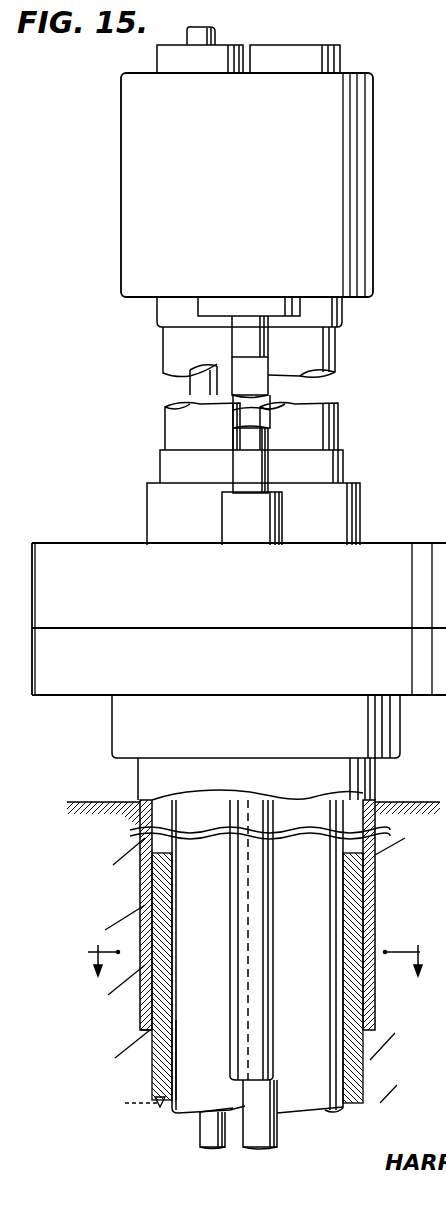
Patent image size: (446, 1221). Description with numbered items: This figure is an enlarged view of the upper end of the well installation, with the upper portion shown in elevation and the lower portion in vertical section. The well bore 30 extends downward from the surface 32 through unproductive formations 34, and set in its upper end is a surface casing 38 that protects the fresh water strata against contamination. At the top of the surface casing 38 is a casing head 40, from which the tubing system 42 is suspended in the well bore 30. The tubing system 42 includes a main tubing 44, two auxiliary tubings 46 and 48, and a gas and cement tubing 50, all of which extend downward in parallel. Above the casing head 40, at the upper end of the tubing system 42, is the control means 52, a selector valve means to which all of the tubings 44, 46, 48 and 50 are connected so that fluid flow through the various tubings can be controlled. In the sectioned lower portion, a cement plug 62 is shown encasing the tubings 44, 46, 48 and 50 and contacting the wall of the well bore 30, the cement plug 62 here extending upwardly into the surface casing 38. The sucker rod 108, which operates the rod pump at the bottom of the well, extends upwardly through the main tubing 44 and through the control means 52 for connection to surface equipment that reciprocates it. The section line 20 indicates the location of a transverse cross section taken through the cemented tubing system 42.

The section line 20- 20 is at (241, 977).
The well bore 30 is at (160, 1104).
The surface 32 is at (85, 803).
The unproductive formations 34 is at (127, 1086).
The surface casing 38 is at (145, 885).
The casing head 40 is at (96, 545).
The tubing system 42 is at (175, 1006).
The main tubing 44 is at (177, 430).
The auxiliary tubing 46 is at (270, 388).
The auxiliary tubing 48 is at (237, 465).
The gas and cement tubing 50 is at (335, 437).
The control means 52 is at (148, 218).
The cement plug 62 is at (357, 905).
The sucker rod 108 is at (215, 35).